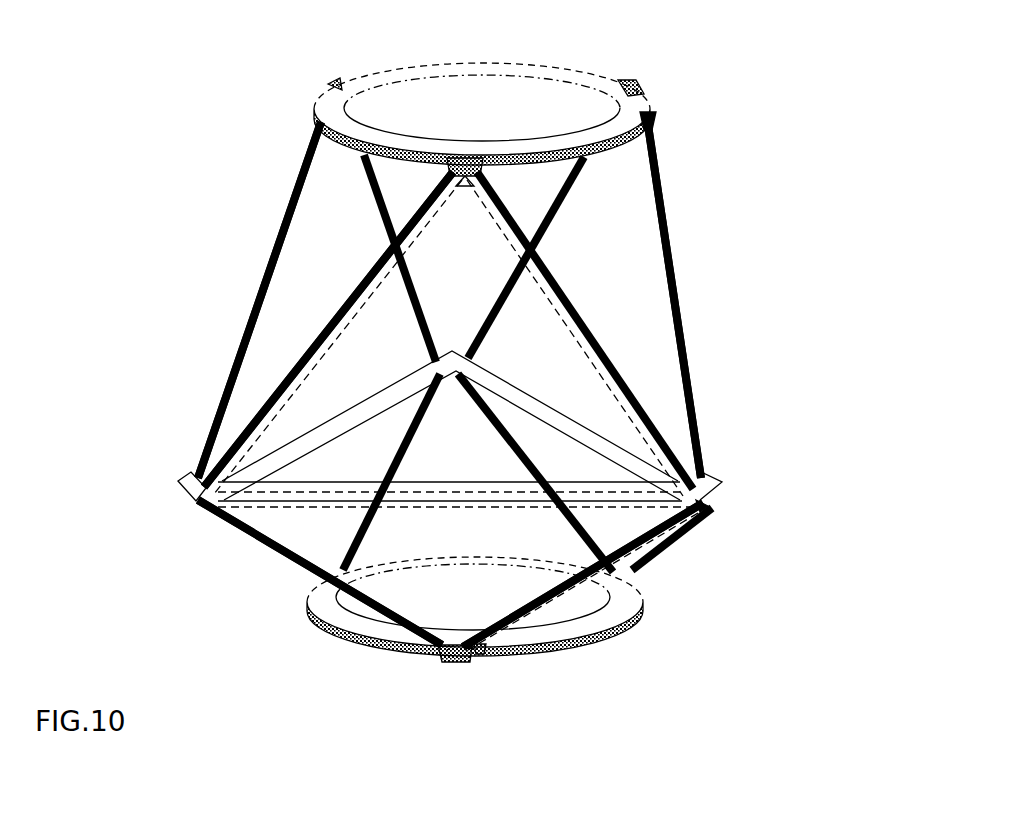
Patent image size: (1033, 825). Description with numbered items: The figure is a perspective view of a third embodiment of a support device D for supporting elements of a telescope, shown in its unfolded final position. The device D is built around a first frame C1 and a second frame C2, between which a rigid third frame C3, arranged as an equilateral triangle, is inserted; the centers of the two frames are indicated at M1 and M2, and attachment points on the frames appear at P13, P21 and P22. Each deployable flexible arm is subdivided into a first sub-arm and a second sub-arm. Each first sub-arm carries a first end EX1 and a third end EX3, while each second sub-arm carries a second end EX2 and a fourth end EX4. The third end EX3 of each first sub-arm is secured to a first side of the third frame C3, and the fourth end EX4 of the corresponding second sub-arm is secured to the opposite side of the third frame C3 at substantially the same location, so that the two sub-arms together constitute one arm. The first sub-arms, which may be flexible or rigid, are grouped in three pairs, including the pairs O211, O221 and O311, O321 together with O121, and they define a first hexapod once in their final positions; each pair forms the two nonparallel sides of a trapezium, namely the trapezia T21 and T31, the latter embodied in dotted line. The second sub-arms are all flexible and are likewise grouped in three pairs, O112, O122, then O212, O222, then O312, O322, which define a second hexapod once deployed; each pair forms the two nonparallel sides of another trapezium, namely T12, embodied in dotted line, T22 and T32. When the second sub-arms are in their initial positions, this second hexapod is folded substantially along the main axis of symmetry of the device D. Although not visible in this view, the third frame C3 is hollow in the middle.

The first frame C1 is at (385, 647).
The second frame C2 is at (640, 103).
The third frame C3 is at (188, 493).
The center of first ring M1 is at (453, 608).
The center of second ring M2 is at (488, 103).
The lower joint node P13 is at (453, 657).
The upper left joint node P21 is at (333, 78).
The upper right joint node P22 is at (627, 78).
The first end EX1 is at (477, 653).
The second end EX2 is at (663, 131).
The third end EX3 is at (702, 512).
The fourth end EX4 is at (705, 456).
The trapezium T12 is at (292, 182).
The trapezium T22 is at (673, 207).
The trapezium T32 is at (345, 320).
The trapezium T31 is at (353, 595).
The trapezium T21 is at (635, 572).
The flexible second sub-arm O112 is at (227, 382).
The flexible second sub-arm O122 is at (382, 215).
The flexible second sub-arm O212 is at (550, 233).
The flexible second sub-arm O222 is at (687, 332).
The flexible second sub-arm O312 is at (638, 395).
The flexible second sub-arm O322 is at (237, 432).
The first sub-arm O121 is at (357, 530).
The first sub-arm O221 is at (668, 545).
The first sub-arm O321 is at (297, 573).
The first sub-arm O211 is at (632, 567).
The first sub-arm O311 is at (530, 613).
The support device D is at (220, 116).